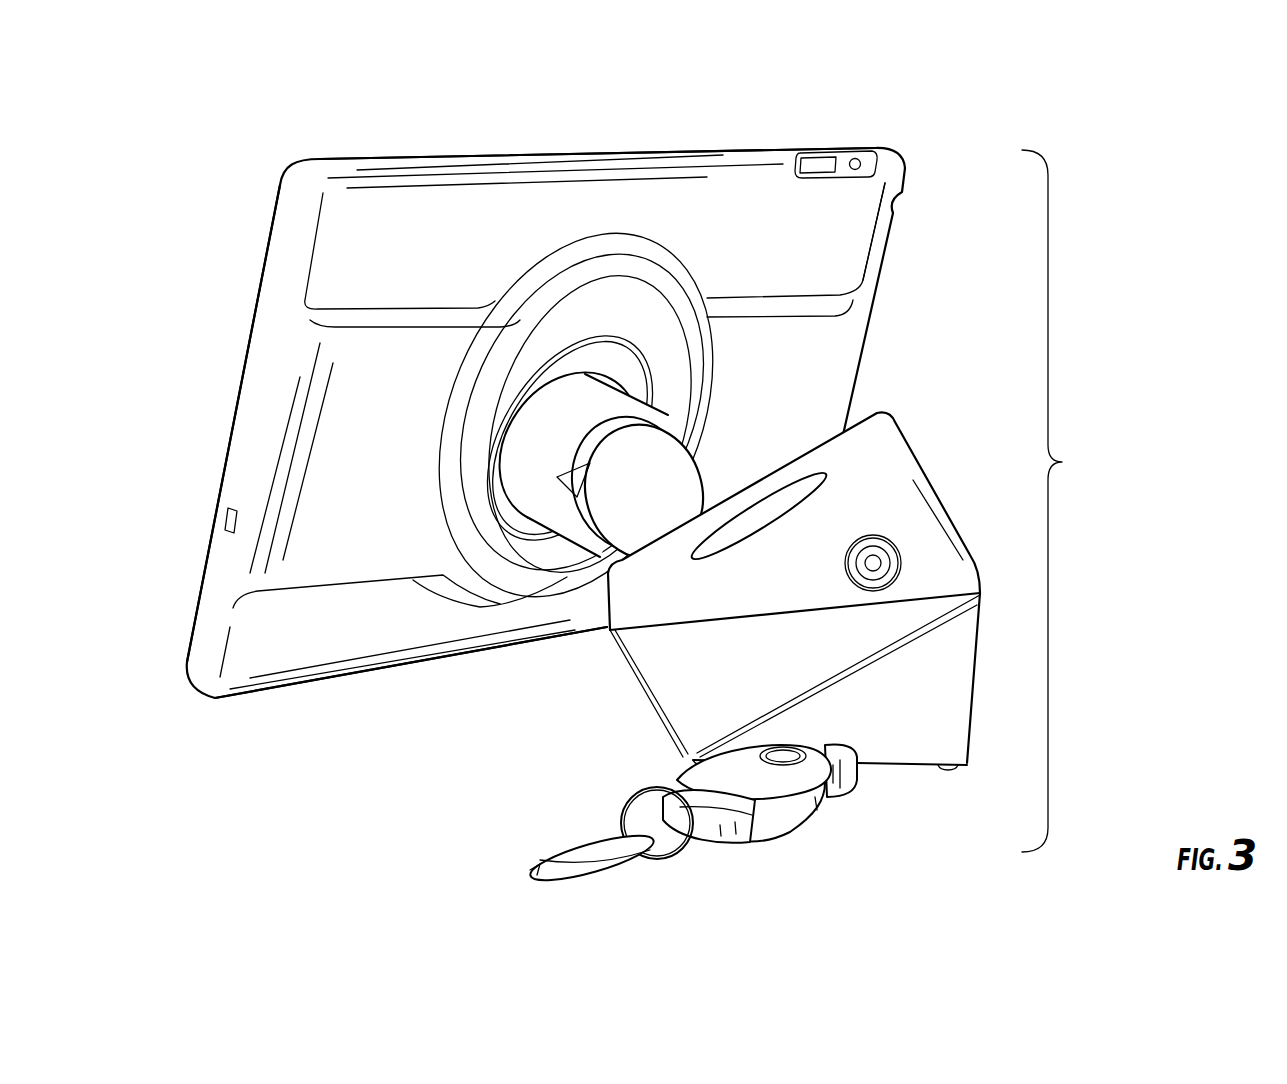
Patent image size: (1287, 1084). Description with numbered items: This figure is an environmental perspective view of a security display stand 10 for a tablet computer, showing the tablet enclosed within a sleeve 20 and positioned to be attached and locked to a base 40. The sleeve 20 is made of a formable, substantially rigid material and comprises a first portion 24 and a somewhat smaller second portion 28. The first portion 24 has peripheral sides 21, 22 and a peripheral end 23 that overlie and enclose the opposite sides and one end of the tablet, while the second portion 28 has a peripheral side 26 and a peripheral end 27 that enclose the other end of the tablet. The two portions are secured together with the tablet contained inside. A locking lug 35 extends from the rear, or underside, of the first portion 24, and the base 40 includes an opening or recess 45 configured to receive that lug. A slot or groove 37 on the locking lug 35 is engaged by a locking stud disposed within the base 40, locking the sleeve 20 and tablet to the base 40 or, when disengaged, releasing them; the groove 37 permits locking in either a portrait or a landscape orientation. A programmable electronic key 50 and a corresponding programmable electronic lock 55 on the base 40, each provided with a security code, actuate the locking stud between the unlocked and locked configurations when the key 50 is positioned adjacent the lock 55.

The display stand 10 is at (1058, 501).
The sleeve 20 is at (544, 419).
The peripheral side 21 is at (295, 687).
The peripheral side 22 is at (511, 157).
The peripheral end 23 is at (203, 588).
The first portion 24 is at (431, 266).
The peripheral side 26 is at (882, 152).
The peripheral end 27 is at (845, 300).
The second portion 28 is at (823, 362).
The locking lug 35 is at (603, 387).
The groove 37 is at (567, 490).
The base 40 is at (747, 562).
The recess 45 is at (768, 487).
The programmable electronic key 50 is at (803, 840).
The programmable electronic lock 55 is at (910, 556).